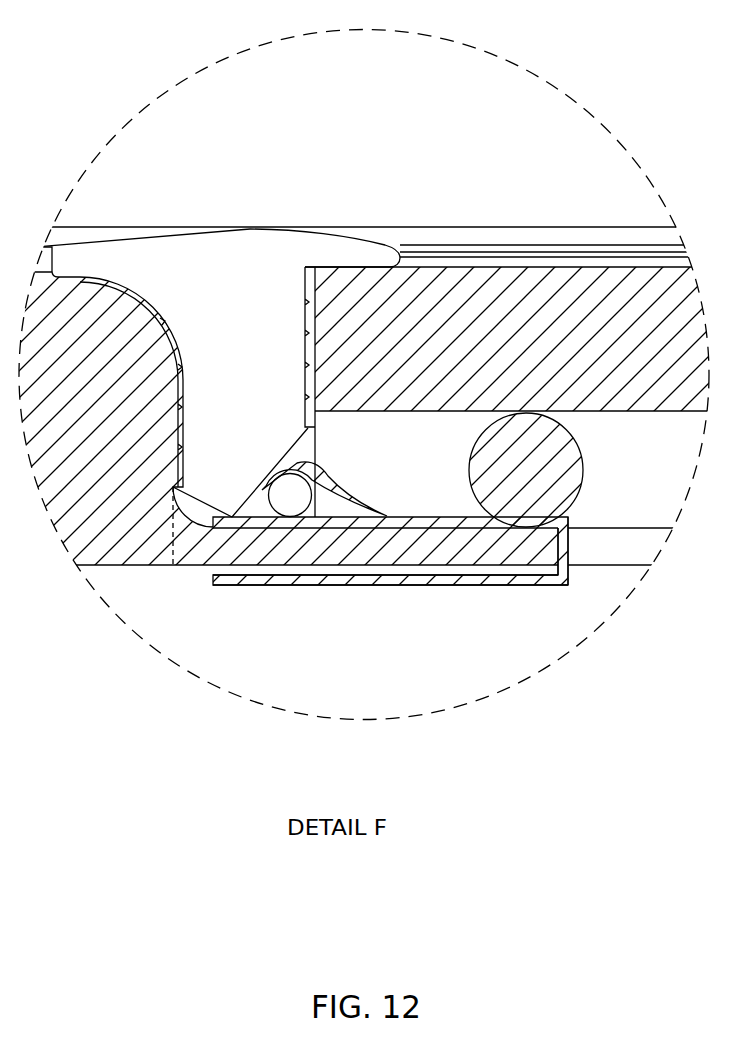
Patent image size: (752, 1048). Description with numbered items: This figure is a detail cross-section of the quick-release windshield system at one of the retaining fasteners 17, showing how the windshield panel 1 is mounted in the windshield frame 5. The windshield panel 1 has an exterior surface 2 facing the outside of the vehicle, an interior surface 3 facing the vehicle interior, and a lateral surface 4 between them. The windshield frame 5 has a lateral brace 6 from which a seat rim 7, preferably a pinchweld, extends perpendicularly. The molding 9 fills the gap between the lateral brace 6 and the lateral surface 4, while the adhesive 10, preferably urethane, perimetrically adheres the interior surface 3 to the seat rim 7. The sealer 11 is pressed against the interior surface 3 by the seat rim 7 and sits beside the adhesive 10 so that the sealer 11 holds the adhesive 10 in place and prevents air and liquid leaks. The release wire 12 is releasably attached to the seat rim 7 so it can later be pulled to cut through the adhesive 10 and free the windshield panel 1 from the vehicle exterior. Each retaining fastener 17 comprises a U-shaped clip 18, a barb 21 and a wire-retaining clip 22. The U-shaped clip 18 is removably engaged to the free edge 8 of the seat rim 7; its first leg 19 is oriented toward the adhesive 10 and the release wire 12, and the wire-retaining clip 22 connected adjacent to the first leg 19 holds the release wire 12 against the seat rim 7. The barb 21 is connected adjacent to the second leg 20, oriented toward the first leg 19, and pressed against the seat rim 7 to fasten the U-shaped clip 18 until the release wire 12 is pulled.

The windshield panel 1 is at (698, 414).
The exterior surface 2 is at (590, 277).
The interior surface 3 is at (617, 405).
The lateral surface 4 is at (318, 321).
The windshield frame 5 is at (135, 598).
The lateral brace 6 is at (164, 408).
The seat rim 7 is at (622, 572).
The free edge 8 is at (568, 545).
The molding 9 is at (232, 238).
The adhesive 10 is at (468, 412).
The sealer 11 is at (576, 474).
The release wire 12 is at (306, 490).
The retaining fastener 17 is at (497, 620).
The U-shaped clip 18 is at (383, 596).
The first leg 19 is at (455, 521).
The second leg 20 is at (446, 586).
The barb 21 is at (376, 567).
The wire-retaining clip 22 is at (295, 462).